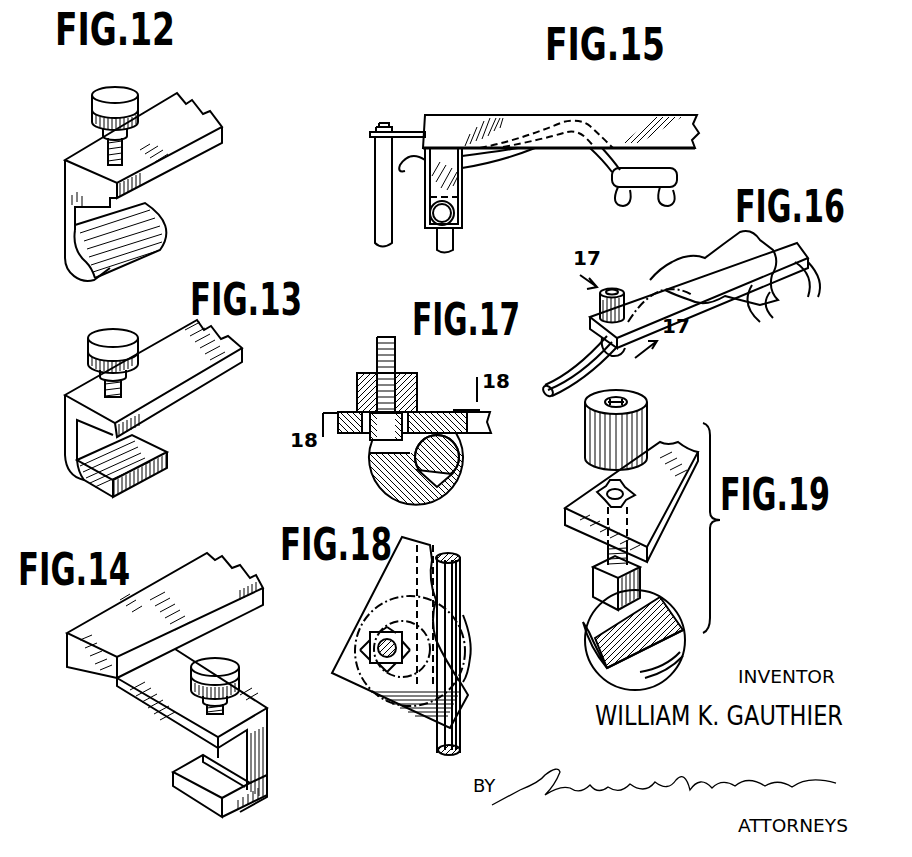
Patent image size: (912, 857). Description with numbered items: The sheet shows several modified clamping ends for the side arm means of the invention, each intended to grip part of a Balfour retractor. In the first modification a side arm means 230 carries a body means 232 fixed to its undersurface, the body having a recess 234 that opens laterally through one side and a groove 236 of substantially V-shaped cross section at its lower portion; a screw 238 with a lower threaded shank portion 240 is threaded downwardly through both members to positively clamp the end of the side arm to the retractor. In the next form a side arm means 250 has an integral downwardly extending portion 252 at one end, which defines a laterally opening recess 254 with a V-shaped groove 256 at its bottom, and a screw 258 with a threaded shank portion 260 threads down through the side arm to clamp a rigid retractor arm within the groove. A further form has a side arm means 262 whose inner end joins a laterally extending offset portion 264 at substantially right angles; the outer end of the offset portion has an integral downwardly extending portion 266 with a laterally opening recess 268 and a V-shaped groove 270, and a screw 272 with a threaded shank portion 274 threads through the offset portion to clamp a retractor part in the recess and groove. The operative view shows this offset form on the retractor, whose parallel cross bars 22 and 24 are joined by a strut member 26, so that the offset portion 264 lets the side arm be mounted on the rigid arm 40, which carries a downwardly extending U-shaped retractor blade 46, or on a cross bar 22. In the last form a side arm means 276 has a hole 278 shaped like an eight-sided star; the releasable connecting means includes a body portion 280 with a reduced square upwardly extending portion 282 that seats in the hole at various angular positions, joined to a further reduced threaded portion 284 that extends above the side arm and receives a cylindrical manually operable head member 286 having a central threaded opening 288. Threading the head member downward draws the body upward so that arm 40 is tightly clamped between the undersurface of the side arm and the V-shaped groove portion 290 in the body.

In FIG. 15, the cross bar 22 is at (447, 247).
In FIG. 15, the cross bar 24 is at (375, 212).
In FIG. 15, the strut member 26 is at (400, 132).
In FIG. 15, the movable arm 40 is at (519, 163).
In FIG. 16, the movable arm 40 is at (577, 366).
In FIG. 17, the movable arm 40 is at (478, 445).
In FIG. 18, the movable arm 40 is at (462, 742).
In FIG. 15, the retractor blade 46 is at (677, 192).
In FIG. 16, the retractor blade 46 is at (773, 315).
In FIG. 12, the side arm means 230 is at (206, 114).
In FIG. 12, the body means 232 is at (67, 190).
In FIG. 12, the recess 234 is at (168, 225).
In FIG. 12, the groove 236 is at (92, 262).
In FIG. 12, the screw 238 is at (127, 93).
In FIG. 12, the threaded shank portion 240 is at (124, 150).
In FIG. 13, the side arm means 250 is at (227, 347).
In FIG. 13, the downwardly extending portion 252 is at (72, 460).
In FIG. 13, the recess 254 is at (157, 454).
In FIG. 13, the groove 256 is at (92, 480).
In FIG. 13, the screw 258 is at (118, 336).
In FIG. 13, the threaded shank portion 260 is at (128, 385).
In FIG. 14, the side arm means 262 is at (203, 563).
In FIG. 15, the side arm means 262 is at (640, 115).
In FIG. 14, the offset portion 264 is at (130, 693).
In FIG. 15, the offset portion 264 is at (453, 178).
In FIG. 14, the downwardly extending portion 266 is at (267, 753).
In FIG. 14, the recess 268 is at (173, 770).
In FIG. 14, the groove 270 is at (253, 797).
In FIG. 14, the screw 272 is at (242, 651).
In FIG. 15, the screw 272 is at (462, 217).
In FIG. 14, the threaded shank portion 274 is at (233, 697).
In FIG. 16, the side arm means 276 is at (720, 253).
In FIG. 17, the side arm means 276 is at (435, 412).
In FIG. 18, the side arm means 276 is at (385, 573).
In FIG. 19, the side arm means 276 is at (680, 443).
In FIG. 17, the hole 278 is at (368, 438).
In FIG. 18, the hole 278 is at (388, 632).
In FIG. 19, the hole 278 is at (628, 488).
In FIG. 16, the body portion 280 is at (618, 357).
In FIG. 17, the body portion 280 is at (388, 489).
In FIG. 19, the body portion 280 is at (570, 637).
In FIG. 18, the upwardly extending portion 282 is at (375, 688).
In FIG. 19, the upwardly extending portion 282 is at (598, 582).
In FIG. 16, the threaded portion 284 is at (612, 288).
In FIG. 17, the threaded portion 284 is at (396, 362).
In FIG. 18, the threaded portion 284 is at (373, 642).
In FIG. 19, the threaded portion 284 is at (608, 553).
In FIG. 16, the head member 286 is at (624, 291).
In FIG. 17, the head member 286 is at (347, 382).
In FIG. 19, the head member 286 is at (641, 406).
In FIG. 19, the threaded opening 288 is at (601, 413).
In FIG. 17, the groove portion 290 is at (453, 480).
In FIG. 19, the groove portion 290 is at (605, 670).